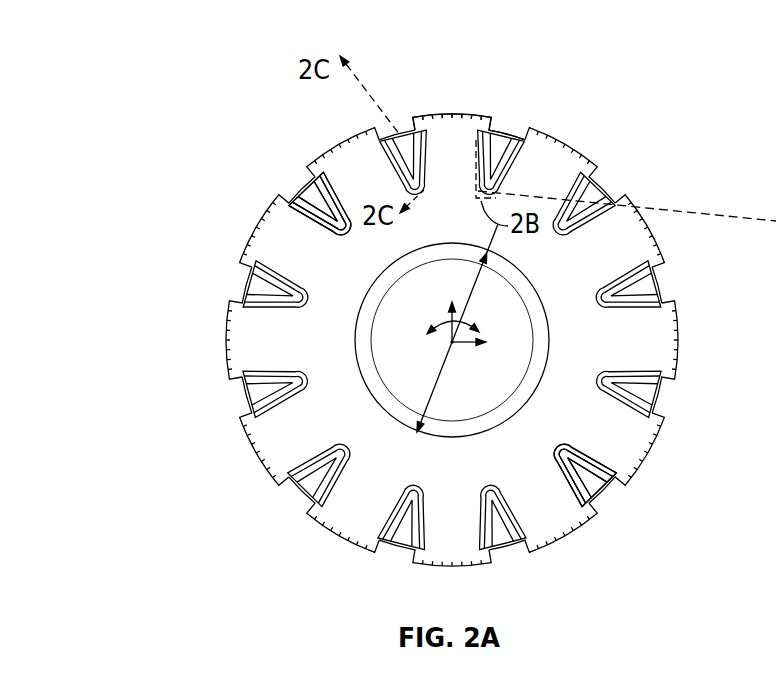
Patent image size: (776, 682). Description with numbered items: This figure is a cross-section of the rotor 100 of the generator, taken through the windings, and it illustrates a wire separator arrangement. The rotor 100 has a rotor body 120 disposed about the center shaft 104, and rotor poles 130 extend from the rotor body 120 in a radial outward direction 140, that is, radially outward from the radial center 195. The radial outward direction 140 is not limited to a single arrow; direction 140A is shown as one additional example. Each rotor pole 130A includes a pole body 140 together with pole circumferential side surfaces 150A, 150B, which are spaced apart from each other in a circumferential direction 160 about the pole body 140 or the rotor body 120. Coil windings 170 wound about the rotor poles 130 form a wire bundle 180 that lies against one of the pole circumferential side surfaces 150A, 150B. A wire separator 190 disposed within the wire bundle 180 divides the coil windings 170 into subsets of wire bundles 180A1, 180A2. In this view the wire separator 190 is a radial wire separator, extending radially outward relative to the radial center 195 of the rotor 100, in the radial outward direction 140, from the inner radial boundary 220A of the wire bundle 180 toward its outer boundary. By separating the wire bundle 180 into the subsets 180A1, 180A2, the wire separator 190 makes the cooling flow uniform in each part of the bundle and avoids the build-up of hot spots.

The rotor 100 is at (270, 343).
The center shaft 104 is at (425, 370).
The rotor body 120 is at (353, 217).
The rotor poles 130 is at (453, 127).
The rotor pole 130A is at (628, 257).
The radial outward direction 140 is at (650, 348).
The radial outward direction 140A is at (480, 346).
The pole circumferential side surface 150A is at (648, 296).
The pole circumferential side surface 150B is at (657, 393).
The circumferential direction 160 is at (466, 318).
The coil windings 170 is at (303, 215).
The wire bundle 180 is at (497, 160).
The subset of wire bundle 180A1 is at (598, 450).
The subset of wire bundle 180A2 is at (602, 482).
The wire separator 190 is at (585, 513).
The radial center 195 is at (456, 346).
The inner radial boundary 220A is at (561, 240).